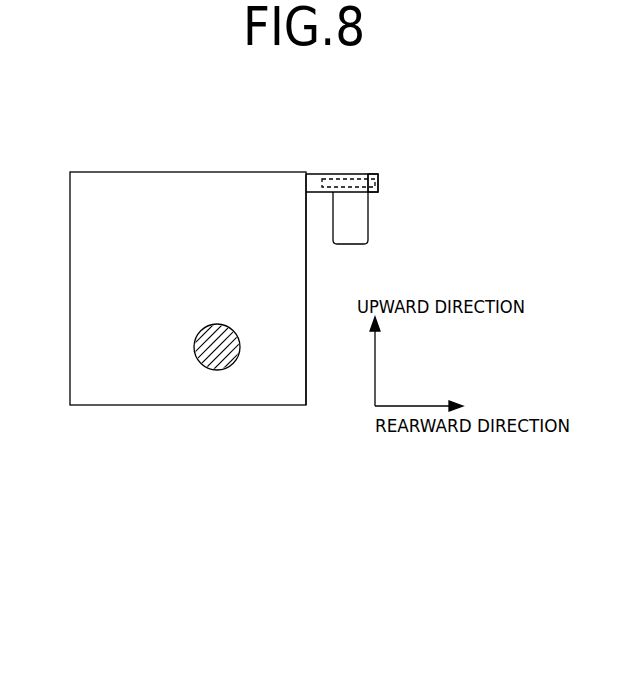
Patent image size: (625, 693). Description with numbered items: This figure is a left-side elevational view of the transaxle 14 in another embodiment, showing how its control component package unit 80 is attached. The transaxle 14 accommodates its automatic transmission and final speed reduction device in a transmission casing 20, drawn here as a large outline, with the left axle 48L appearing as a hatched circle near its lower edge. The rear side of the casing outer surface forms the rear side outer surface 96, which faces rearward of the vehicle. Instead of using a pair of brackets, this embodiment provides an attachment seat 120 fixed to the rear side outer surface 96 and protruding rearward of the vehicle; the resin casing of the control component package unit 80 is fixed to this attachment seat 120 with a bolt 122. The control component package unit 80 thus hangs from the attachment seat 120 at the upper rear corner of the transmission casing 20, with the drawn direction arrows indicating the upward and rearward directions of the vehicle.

The transaxle 14 is at (118, 163).
The transmission casing 20 is at (203, 197).
The attachment seat 120 is at (322, 183).
The bolt 122 is at (379, 181).
The control component package unit 80 is at (353, 223).
The rear side outer surface 96 is at (307, 312).
The left axle 48L is at (227, 368).